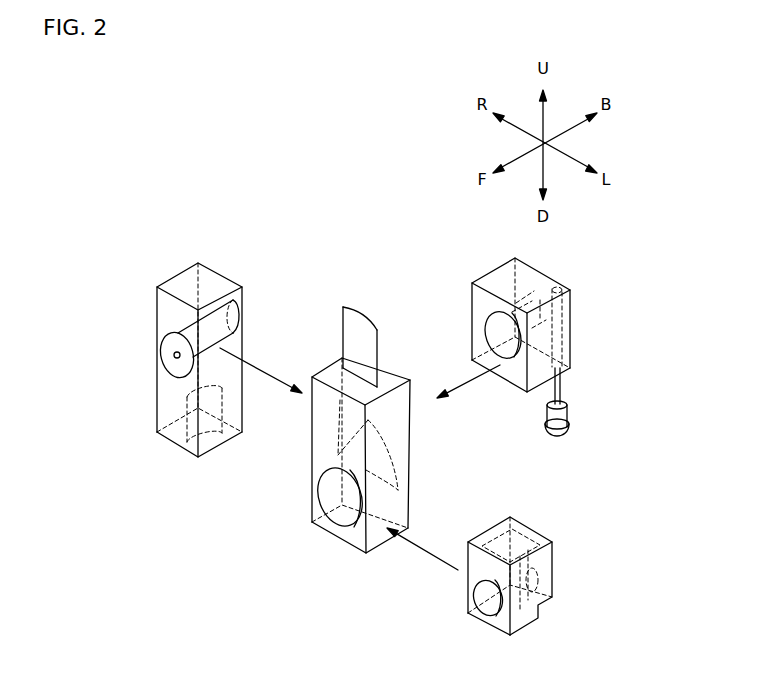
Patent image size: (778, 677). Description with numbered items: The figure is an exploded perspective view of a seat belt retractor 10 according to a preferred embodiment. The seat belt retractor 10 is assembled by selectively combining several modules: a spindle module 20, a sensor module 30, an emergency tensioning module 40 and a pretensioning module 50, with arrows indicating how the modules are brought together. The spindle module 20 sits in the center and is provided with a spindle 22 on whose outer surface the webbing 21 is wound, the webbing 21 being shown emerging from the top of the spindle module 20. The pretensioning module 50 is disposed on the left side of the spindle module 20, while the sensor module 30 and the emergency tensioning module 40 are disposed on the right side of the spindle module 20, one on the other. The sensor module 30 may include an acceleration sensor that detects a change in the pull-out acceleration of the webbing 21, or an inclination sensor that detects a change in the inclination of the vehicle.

The seat belt retractor 10 is at (394, 228).
The spindle module 20 is at (308, 474).
The webbing 21 is at (342, 333).
The spindle 22 is at (343, 507).
The sensor module 30 is at (555, 567).
The emergency tensioning module 40 is at (572, 323).
The pretensioning module 50 is at (152, 312).